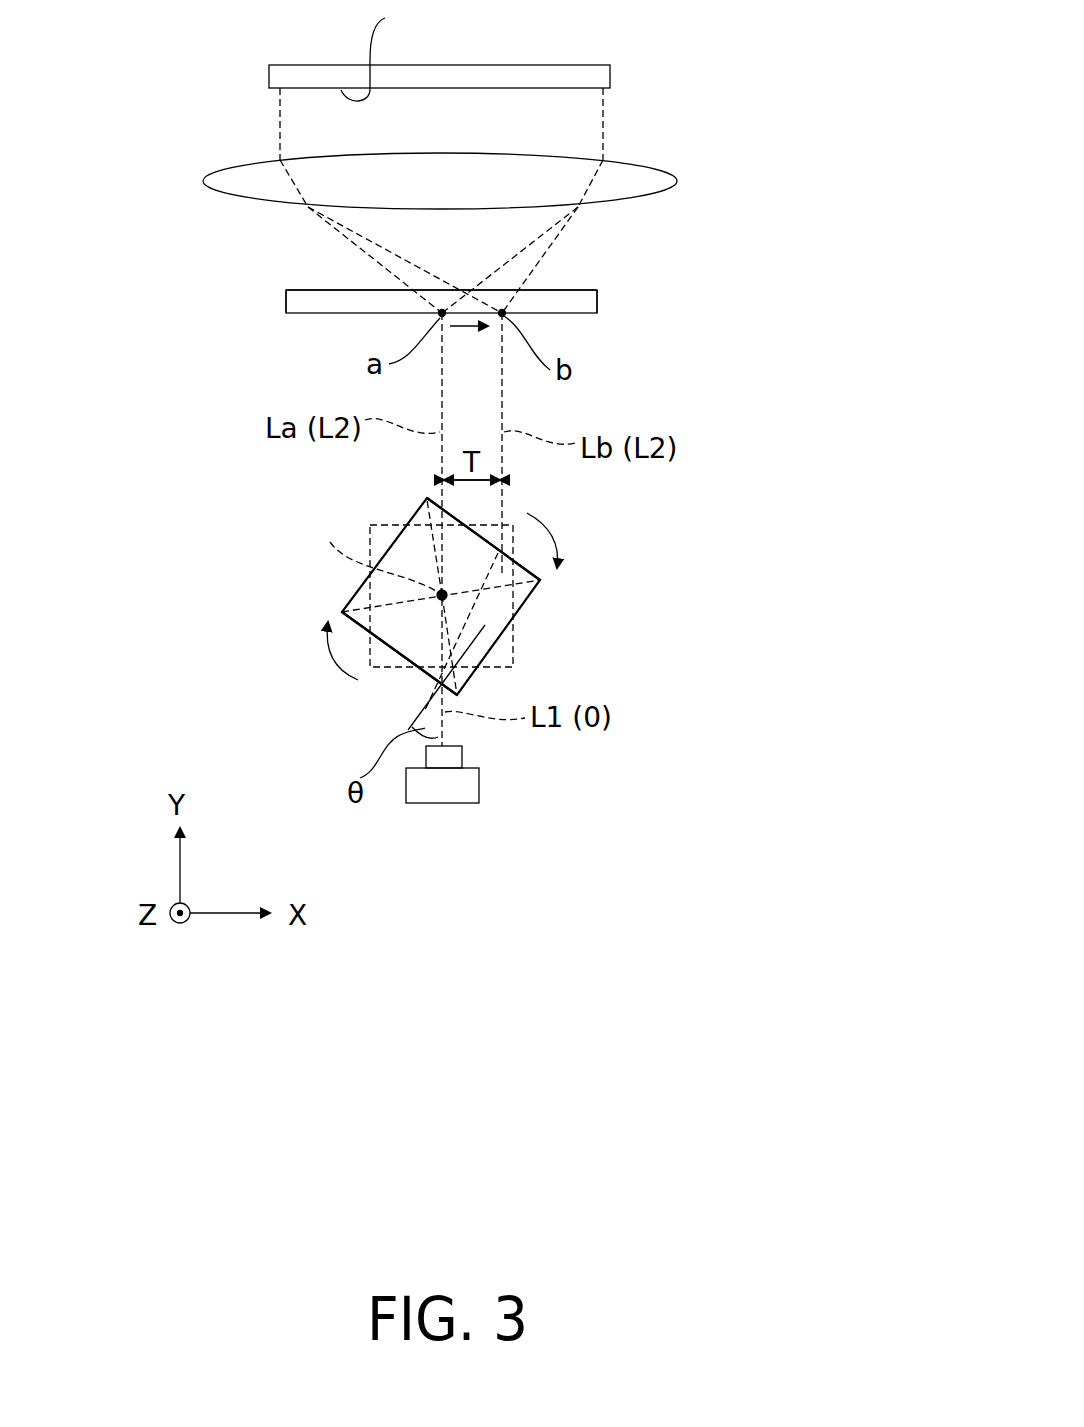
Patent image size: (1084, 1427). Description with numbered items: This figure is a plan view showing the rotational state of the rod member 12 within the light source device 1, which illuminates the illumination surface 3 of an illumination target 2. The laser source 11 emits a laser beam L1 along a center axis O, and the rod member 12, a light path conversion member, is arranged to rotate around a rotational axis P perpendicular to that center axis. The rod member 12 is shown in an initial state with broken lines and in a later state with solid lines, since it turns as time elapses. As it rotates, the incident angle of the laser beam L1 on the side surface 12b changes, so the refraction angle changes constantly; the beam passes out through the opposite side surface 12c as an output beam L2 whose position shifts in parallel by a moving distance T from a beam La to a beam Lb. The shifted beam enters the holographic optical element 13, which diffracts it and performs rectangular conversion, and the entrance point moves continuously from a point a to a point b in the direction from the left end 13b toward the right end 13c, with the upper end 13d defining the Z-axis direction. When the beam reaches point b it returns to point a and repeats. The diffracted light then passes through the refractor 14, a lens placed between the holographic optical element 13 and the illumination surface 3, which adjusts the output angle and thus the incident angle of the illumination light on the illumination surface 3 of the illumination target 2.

The light source device 1 is at (812, 74).
The illumination target 2 is at (610, 73).
The illumination surface 3 is at (373, 51).
The laser source 11 is at (468, 787).
The rod member 12 is at (522, 597).
The side surface 12b is at (395, 660).
The side surface 12c is at (540, 580).
The holographic optical element 13 is at (298, 281).
The left end 13b is at (285, 300).
The right end 13c is at (597, 300).
The upper end 13d is at (593, 290).
The refractor 14 is at (677, 177).